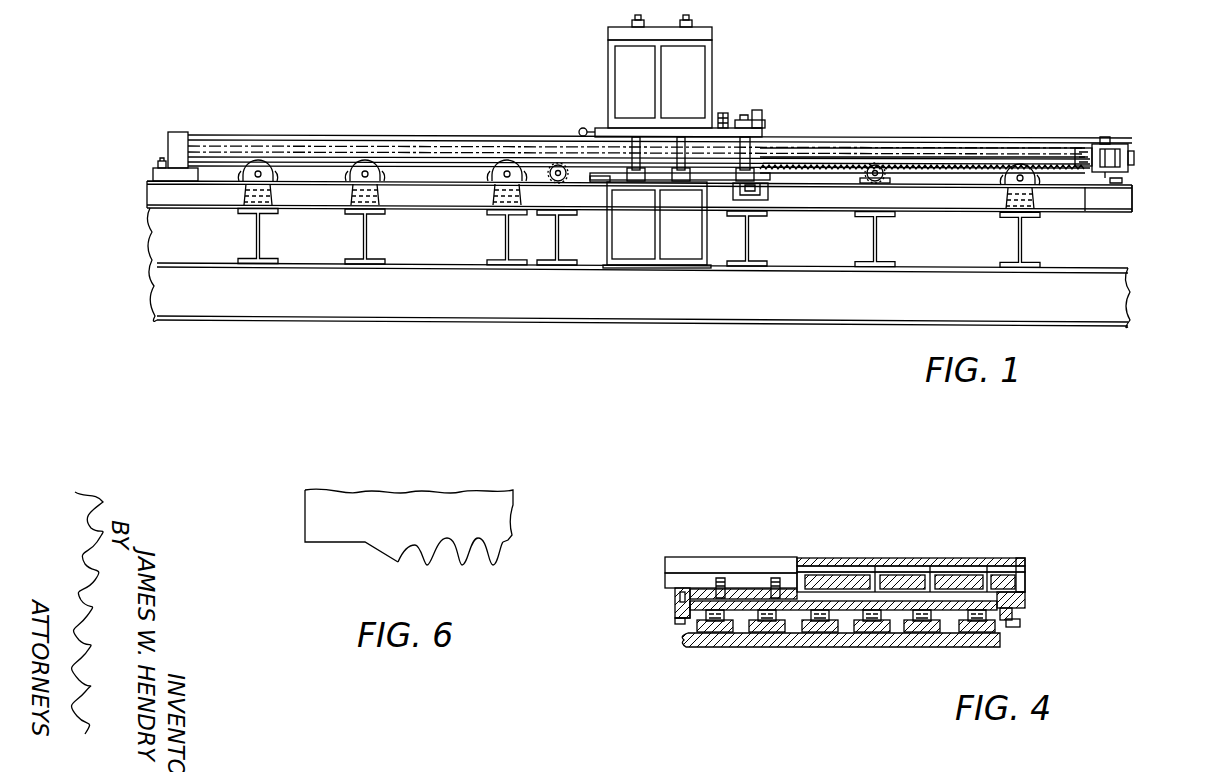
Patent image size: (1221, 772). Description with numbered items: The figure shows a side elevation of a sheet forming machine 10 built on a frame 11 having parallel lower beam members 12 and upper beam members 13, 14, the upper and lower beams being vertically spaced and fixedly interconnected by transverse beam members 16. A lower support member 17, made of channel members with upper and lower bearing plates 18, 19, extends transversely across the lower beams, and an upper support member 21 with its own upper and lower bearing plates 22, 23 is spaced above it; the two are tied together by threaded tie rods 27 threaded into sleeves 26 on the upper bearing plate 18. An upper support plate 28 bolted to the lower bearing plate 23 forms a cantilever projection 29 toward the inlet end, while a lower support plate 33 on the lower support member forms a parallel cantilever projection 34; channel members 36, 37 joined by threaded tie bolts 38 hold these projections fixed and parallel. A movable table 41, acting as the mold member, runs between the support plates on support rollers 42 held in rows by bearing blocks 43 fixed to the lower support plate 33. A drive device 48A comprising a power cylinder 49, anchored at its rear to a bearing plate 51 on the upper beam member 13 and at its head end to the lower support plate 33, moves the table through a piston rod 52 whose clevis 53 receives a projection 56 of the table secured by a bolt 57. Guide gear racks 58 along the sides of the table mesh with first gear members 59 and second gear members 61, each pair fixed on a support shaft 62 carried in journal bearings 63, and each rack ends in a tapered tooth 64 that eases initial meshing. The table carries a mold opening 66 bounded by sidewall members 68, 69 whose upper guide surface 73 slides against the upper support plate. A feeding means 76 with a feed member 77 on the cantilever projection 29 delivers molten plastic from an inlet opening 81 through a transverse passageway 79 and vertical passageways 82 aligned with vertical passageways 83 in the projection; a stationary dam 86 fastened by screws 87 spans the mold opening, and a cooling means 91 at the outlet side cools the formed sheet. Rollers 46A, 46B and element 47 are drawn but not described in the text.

In FIG. 1, the sheet forming machine 10 is at (403, 76).
In FIG. 1, the frame 11 is at (478, 342).
In FIG. 1, the lower beam members 12 is at (578, 305).
In FIG. 1, the upper beam members 13 is at (230, 203).
In FIG. 1, the upper beam members 14 is at (1087, 202).
In FIG. 1, the transverse beam members 16 is at (380, 236).
In FIG. 1, the lower support member 17 is at (657, 238).
In FIG. 1, the upper bearing plate 18 is at (642, 188).
In FIG. 1, the lower bearing plate 19 is at (654, 268).
In FIG. 1, the upper support member 21 is at (608, 60).
In FIG. 1, the upper bearing plate 22 is at (608, 34).
In FIG. 1, the lower bearing plate 23 is at (610, 125).
In FIG. 1, the threaded sleeves 26 is at (690, 188).
In FIG. 1, the threaded tie rods 27 is at (635, 140).
In FIG. 1, the upper support plate 28 is at (680, 140).
In FIG. 1, the cantilever projection 29 is at (760, 130).
In FIG. 4, the cantilever projection 29 is at (680, 581).
In FIG. 1, the lower support plate 33 is at (604, 207).
In FIG. 4, the lower support plate 33 is at (758, 650).
In FIG. 1, the cantilever projection 34 is at (770, 183).
In FIG. 1, the channel member 36 is at (760, 114).
In FIG. 1, the channel member 37 is at (760, 200).
In FIG. 1, the threaded tie bolts 38 is at (752, 142).
In FIG. 1, the movable table 41 is at (922, 138).
In FIG. 4, the movable table 41 is at (660, 612).
In FIG. 4, the support rollers 42 is at (872, 638).
In FIG. 4, the bearing blocks 43 is at (834, 638).
In FIG. 1, the roller support 46A is at (1040, 174).
In FIG. 1, the roller supports 46B is at (294, 175).
In FIG. 1, the end block 47 is at (255, 165).
In FIG. 1, the drive device 48A is at (298, 130).
In FIG. 1, the power cylinder 49 is at (401, 152).
In FIG. 1, the bearing plate 51 is at (164, 182).
In FIG. 1, the piston rod 52 is at (1000, 151).
In FIG. 1, the clevis 53 is at (1082, 148).
In FIG. 1, the projection 56 is at (1132, 158).
In FIG. 1, the bolt 57 is at (1114, 146).
In FIG. 1, the gear racks 58 is at (970, 171).
In FIG. 6, the gear racks 58 is at (508, 518).
In FIG. 4, the gear racks 58 is at (1012, 624).
In FIG. 1, the first gear members 59 is at (867, 178).
In FIG. 1, the second gear members 61 is at (528, 182).
In FIG. 1, the support shaft 62 is at (878, 178).
In FIG. 1, the journal bearings 63 is at (568, 180).
In FIG. 6, the tapered tooth 64 is at (396, 560).
In FIG. 4, the mold opening 66 is at (943, 606).
In FIG. 4, the sidewall member 68 is at (670, 598).
In FIG. 4, the sidewall member 69 is at (1016, 602).
In FIG. 4, the upper guide surface 73 is at (1028, 589).
In FIG. 1, the feeding means 76 is at (724, 104).
In FIG. 4, the feeding means 76 is at (819, 538).
In FIG. 4, the feed member 77 is at (775, 570).
In FIG. 4, the transverse passageway 79 is at (992, 548).
In FIG. 4, the inlet opening 81 is at (845, 567).
In FIG. 4, the vertical passageways 82 is at (870, 580).
In FIG. 4, the vertical passageways 83 is at (1004, 562).
In FIG. 4, the stationary dam 86 is at (746, 588).
In FIG. 4, the screws 87 is at (724, 582).
In FIG. 1, the cooling means 91 is at (575, 126).